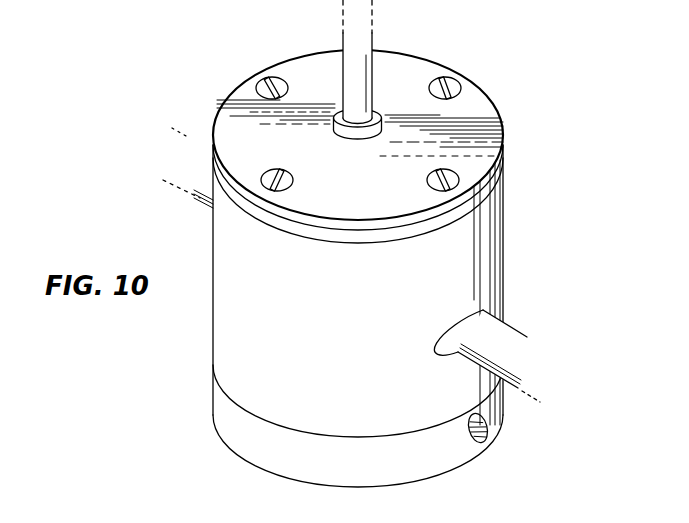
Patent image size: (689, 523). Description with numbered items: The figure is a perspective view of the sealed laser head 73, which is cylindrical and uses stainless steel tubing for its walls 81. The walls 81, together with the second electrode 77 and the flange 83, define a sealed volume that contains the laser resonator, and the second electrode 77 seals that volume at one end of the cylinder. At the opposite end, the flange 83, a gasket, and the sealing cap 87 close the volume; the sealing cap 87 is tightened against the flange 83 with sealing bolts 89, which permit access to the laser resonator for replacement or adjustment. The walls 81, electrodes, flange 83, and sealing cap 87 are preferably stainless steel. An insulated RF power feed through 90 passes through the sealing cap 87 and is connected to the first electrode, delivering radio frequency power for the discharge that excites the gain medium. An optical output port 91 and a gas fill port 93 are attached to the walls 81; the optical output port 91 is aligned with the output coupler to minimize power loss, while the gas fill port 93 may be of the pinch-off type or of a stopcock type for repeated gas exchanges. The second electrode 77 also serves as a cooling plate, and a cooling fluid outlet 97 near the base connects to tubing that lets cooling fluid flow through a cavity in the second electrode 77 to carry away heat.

The sealed laser head 73 is at (341, 317).
The second electrode 77 is at (447, 458).
The walls 81 is at (490, 268).
The flange 83 is at (492, 205).
The sealing cap 87 is at (492, 138).
The sealing bolts 89 is at (447, 88).
The insulated RF power feed through 90 is at (363, 50).
The optical output port 91 is at (524, 350).
The gas fill port 93 is at (213, 152).
The cooling fluid outlet 97 is at (488, 432).